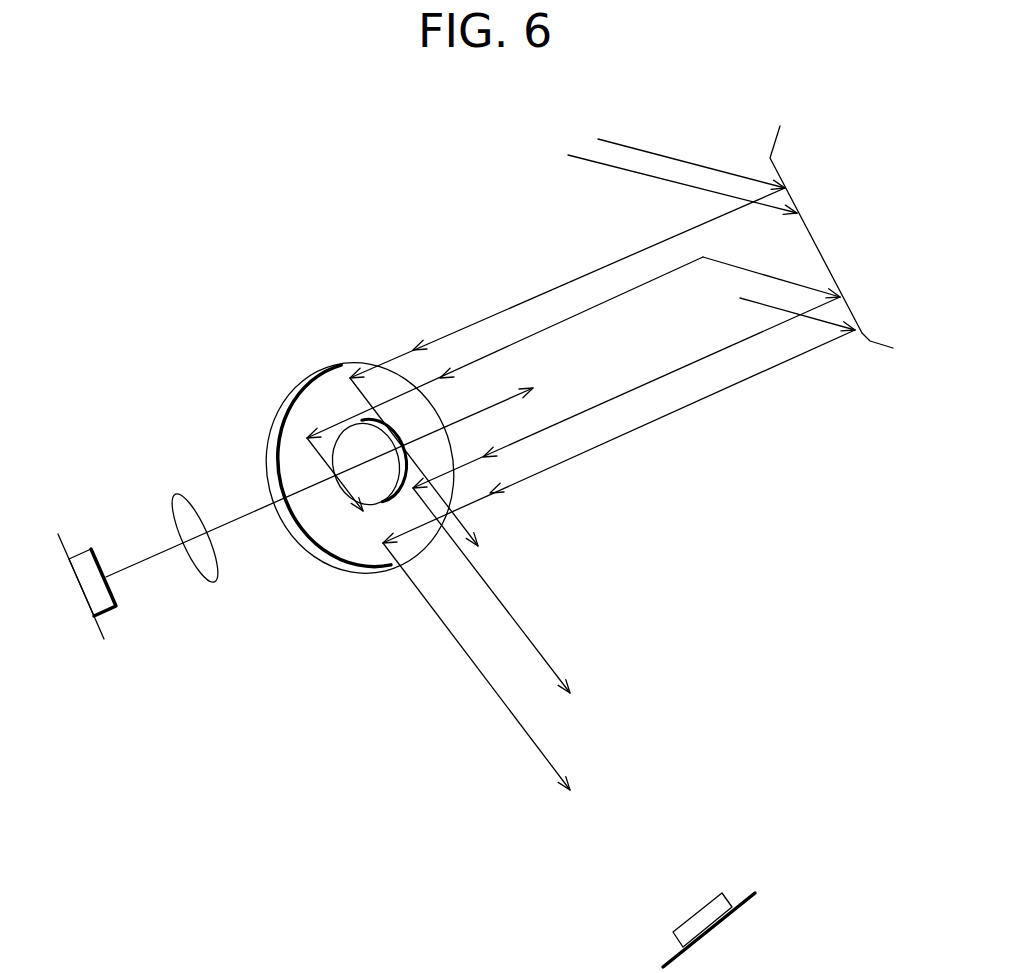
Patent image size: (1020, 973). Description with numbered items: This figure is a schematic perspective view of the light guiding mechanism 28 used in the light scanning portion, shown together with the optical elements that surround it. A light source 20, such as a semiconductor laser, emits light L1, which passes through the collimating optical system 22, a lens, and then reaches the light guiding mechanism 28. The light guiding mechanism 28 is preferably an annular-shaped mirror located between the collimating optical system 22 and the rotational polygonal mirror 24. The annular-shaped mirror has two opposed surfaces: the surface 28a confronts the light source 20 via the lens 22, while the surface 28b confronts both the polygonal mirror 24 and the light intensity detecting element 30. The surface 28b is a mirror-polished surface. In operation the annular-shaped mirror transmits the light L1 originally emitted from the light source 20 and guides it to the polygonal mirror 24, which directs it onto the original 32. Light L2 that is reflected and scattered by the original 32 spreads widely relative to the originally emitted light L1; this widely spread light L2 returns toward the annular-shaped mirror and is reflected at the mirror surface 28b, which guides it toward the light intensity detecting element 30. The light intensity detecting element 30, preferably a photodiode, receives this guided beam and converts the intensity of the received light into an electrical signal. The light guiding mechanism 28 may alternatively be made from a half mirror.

The light source 20 is at (80, 593).
The collimating optical system 22 is at (182, 498).
The rotational polygonal mirror 24 is at (817, 228).
The light guiding mechanism 28 is at (400, 501).
The surface of annular-shaped mirror 28a is at (323, 550).
The mirror-polished surface 28b is at (407, 552).
The light intensity detecting element 30 is at (712, 930).
The original 32 is at (555, 169).
The light originally emitted from the light source L1 is at (155, 560).
The light reflected and scattered by the original L2 is at (553, 275).